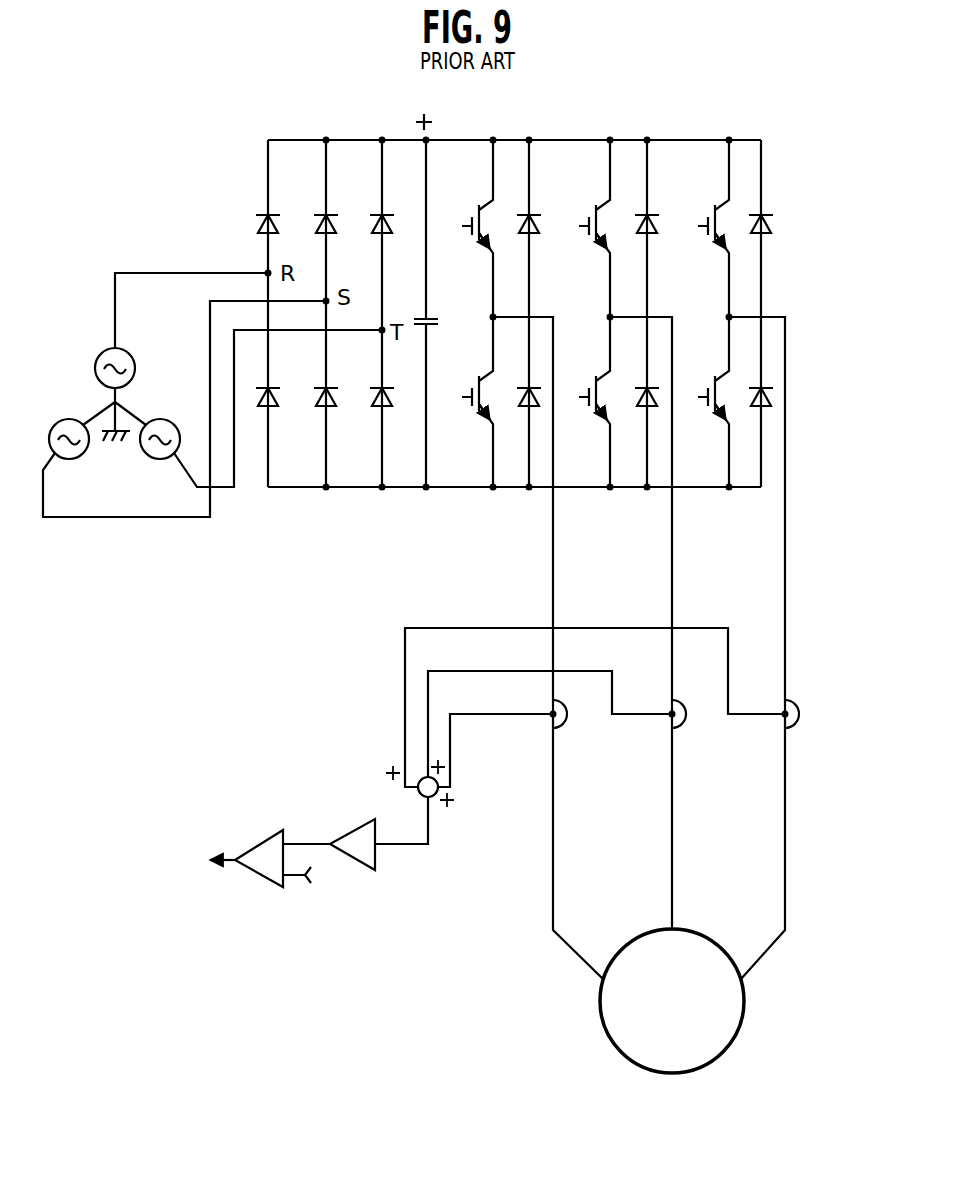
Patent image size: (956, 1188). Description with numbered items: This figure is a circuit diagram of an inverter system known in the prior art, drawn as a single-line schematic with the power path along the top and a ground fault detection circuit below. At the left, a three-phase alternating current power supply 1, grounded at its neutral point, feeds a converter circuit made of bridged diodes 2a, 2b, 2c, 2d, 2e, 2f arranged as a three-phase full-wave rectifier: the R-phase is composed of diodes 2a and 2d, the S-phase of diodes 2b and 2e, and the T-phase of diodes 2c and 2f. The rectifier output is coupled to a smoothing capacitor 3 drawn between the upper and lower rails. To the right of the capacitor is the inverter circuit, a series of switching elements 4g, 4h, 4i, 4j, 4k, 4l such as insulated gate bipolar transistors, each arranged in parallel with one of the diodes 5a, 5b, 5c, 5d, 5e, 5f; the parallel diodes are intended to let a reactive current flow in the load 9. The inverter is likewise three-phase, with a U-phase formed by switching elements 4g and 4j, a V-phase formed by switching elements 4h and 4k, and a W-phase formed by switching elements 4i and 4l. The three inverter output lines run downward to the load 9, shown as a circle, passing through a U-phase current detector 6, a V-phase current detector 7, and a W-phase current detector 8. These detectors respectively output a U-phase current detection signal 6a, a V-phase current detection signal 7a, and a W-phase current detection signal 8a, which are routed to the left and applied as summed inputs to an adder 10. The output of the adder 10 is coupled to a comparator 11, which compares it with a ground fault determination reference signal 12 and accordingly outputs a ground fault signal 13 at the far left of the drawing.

The three-phase alternating current power supply 1 is at (98, 358).
The diode 2a is at (259, 223).
The diode 2b is at (317, 223).
The diode 2c is at (373, 223).
The diode 2d is at (274, 405).
The diode 2e is at (332, 405).
The diode 2f is at (388, 405).
The smoothing capacitor 3 is at (423, 318).
The switching element 4g is at (475, 225).
The switching element 4h is at (592, 225).
The switching element 4i is at (711, 225).
The switching element 4j is at (475, 396).
The switching element 4k is at (592, 396).
The switching element 4l is at (711, 396).
The diode 5a is at (535, 232).
The diode 5b is at (653, 232).
The diode 5c is at (767, 232).
The diode 5d is at (526, 406).
The diode 5e is at (644, 406).
The diode 5f is at (758, 406).
The U-phase current detector 6 is at (556, 729).
The V-phase current detector 7 is at (675, 729).
The W-phase current detector 8 is at (788, 729).
The U-phase current detection signal 6a is at (495, 738).
The V-phase current detection signal 7a is at (550, 710).
The W-phase current detection signal 8a is at (595, 693).
The load 9 is at (600, 1020).
The adder 10 is at (416, 800).
The comparator 11 is at (266, 835).
The ground fault determination reference signal 12 is at (329, 853).
The ground fault signal 13 is at (202, 860).